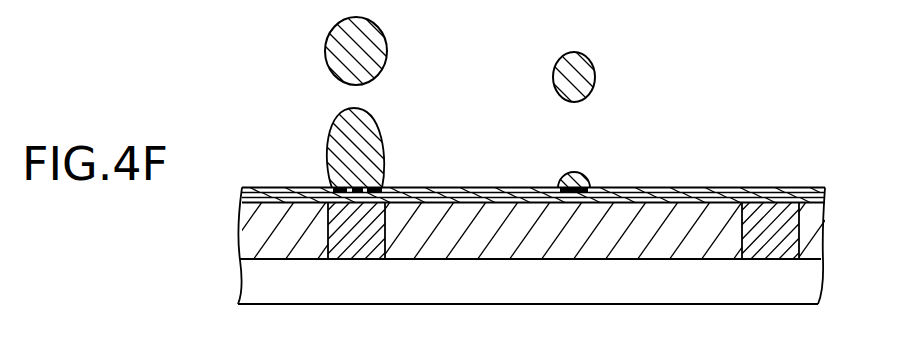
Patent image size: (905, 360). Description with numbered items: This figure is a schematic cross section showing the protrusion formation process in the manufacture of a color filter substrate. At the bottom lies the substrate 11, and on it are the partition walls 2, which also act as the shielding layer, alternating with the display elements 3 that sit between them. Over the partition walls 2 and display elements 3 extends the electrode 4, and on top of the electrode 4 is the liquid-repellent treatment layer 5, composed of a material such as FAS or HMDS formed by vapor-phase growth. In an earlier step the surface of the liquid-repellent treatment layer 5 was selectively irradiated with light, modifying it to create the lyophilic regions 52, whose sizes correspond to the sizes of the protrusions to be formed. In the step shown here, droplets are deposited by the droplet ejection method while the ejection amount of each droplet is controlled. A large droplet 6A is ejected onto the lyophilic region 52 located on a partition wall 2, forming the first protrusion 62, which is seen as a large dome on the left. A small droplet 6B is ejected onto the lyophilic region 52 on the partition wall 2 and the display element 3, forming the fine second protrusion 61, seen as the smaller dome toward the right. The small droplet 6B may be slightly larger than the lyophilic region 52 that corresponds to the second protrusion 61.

The substrate 11 is at (803, 288).
The display element 3 is at (812, 247).
The partition wall 2 is at (358, 248).
The electrode 4 is at (815, 200).
The liquid-repellent treatment layer 5 is at (814, 192).
The lyophilic region 52 is at (362, 193).
The first protrusion 62 is at (345, 136).
The second protrusion 61 is at (570, 181).
The large droplet 6A is at (368, 52).
The small droplet 6B is at (578, 78).